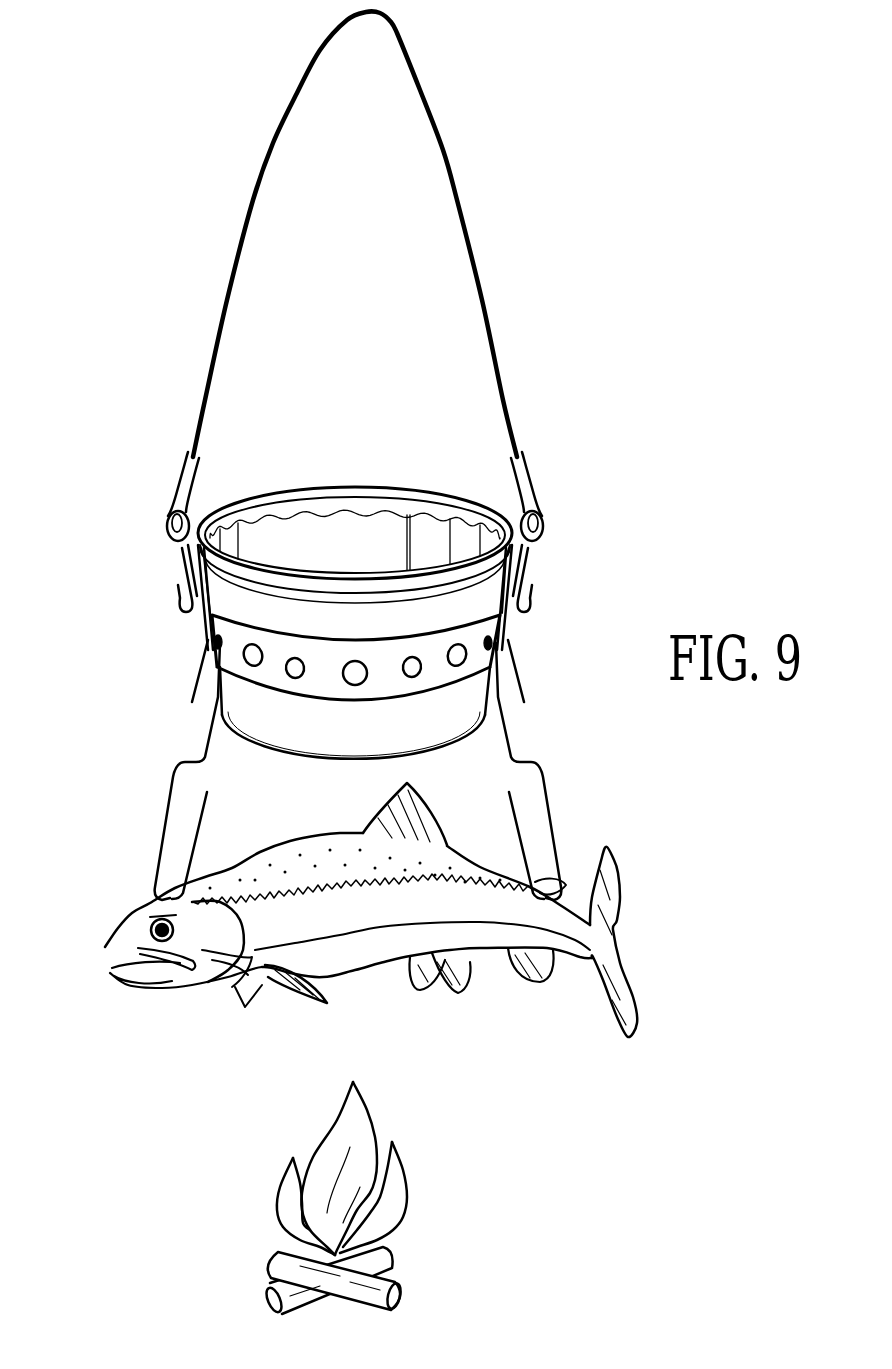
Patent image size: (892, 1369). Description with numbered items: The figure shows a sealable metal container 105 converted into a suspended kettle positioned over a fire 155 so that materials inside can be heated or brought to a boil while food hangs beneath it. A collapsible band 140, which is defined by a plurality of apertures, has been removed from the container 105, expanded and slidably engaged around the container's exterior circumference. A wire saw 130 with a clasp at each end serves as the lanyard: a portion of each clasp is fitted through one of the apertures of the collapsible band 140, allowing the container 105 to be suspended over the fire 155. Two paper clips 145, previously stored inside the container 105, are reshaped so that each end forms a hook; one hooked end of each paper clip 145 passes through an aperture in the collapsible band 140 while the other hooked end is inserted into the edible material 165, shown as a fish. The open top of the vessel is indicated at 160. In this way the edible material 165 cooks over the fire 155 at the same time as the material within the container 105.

The container 105 is at (332, 762).
The wire saw 130 is at (452, 170).
The collapsible band 140 is at (235, 632).
The paper clips 145 is at (165, 815).
The fire 155 is at (407, 1207).
The strainer insert 160 is at (338, 513).
The edible material 165 is at (630, 980).